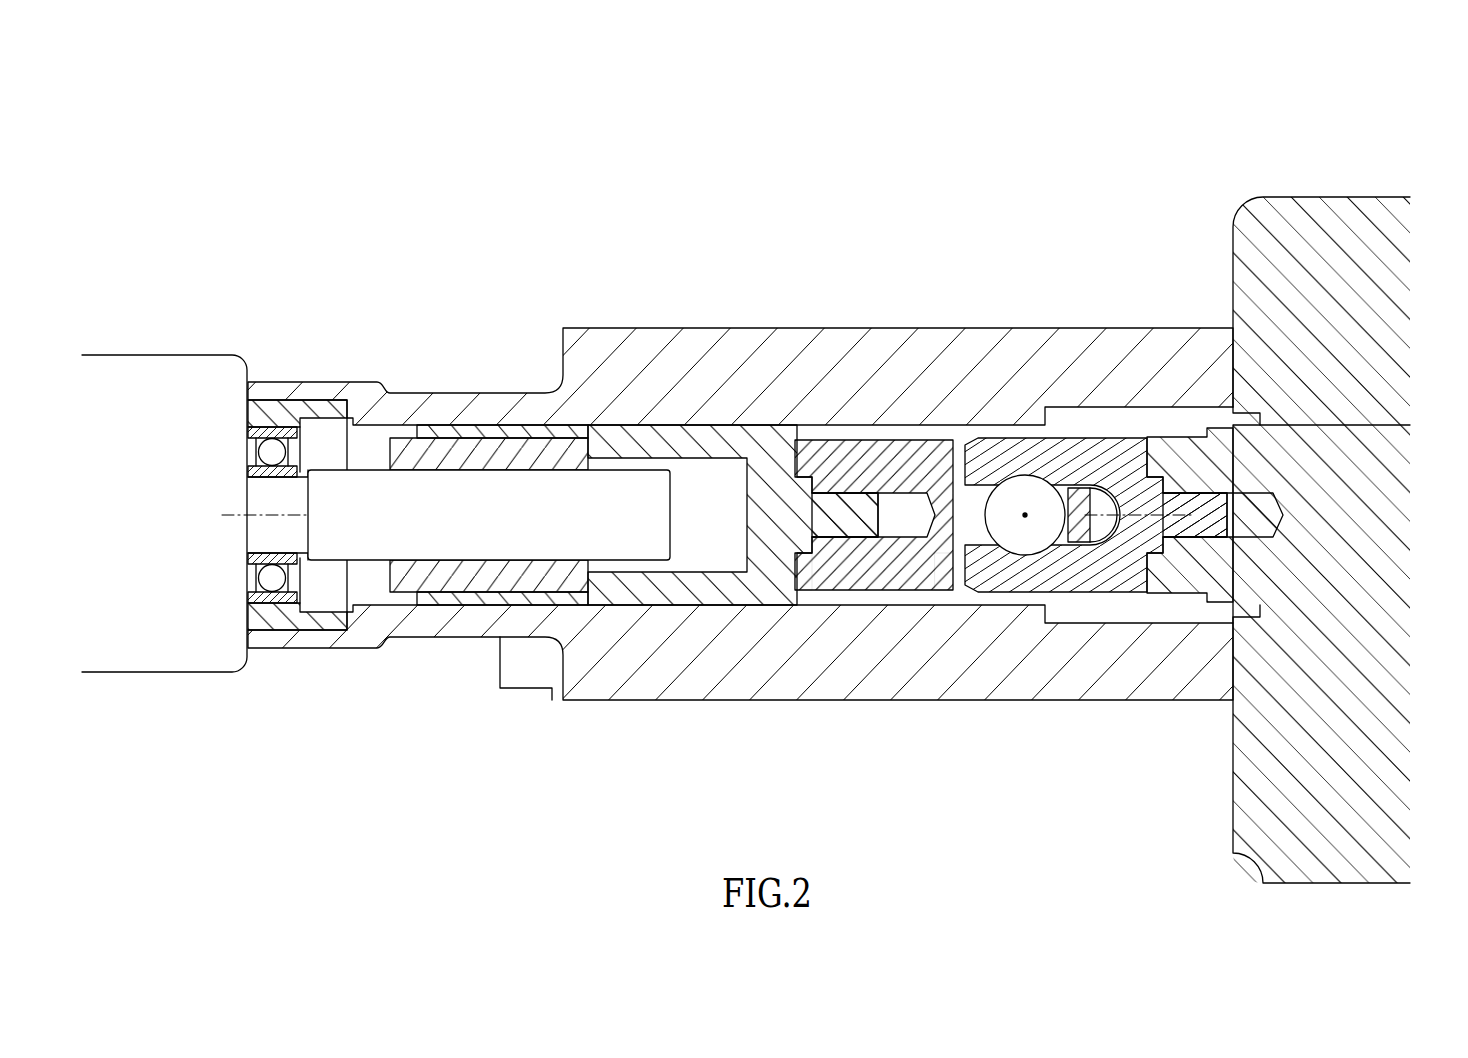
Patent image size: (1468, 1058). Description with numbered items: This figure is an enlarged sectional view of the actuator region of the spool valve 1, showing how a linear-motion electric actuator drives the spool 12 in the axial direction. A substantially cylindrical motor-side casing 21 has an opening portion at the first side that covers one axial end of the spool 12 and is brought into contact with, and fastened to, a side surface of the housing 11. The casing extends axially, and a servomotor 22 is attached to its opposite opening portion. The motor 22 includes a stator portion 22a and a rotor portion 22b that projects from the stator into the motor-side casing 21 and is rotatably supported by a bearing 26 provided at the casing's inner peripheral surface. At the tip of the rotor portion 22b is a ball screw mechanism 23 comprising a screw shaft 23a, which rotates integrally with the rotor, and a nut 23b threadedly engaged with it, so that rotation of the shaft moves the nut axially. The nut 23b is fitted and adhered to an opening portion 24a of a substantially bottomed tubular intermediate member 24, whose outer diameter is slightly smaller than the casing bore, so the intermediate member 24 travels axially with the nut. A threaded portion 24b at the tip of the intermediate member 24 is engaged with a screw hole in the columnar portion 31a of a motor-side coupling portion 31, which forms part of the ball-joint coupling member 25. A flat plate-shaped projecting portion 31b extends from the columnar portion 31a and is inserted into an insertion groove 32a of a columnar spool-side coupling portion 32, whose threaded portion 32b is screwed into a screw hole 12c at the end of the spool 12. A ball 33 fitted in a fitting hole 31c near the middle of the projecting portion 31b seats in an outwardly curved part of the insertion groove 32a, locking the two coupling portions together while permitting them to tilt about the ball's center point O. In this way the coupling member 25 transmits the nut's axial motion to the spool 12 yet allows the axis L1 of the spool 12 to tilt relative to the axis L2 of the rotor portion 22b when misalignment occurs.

The spool valve 1 is at (1312, 128).
The housing 11 is at (1350, 217).
The spool 12 is at (1303, 560).
The screw hole 12c is at (1250, 490).
The motor-side casing 21 is at (765, 328).
The motor 22 is at (138, 712).
The stator portion 22a is at (179, 662).
The rotor portion 22b is at (262, 491).
The ball screw mechanism 23 is at (489, 630).
The screw shaft 23a is at (373, 550).
The nut 23b is at (455, 590).
The intermediate member 24 is at (647, 531).
The opening portion 24a is at (474, 433).
The threaded portion 24b is at (845, 522).
The coupling member 25 is at (1060, 237).
The bearing 26 is at (283, 428).
The motor-side coupling portion 31 is at (942, 508).
The columnar portion 31a is at (893, 592).
The projecting portion 31b is at (1067, 437).
The fitting hole 31c is at (985, 590).
The spool-side coupling portion 32 is at (1096, 508).
The insertion groove 32a is at (1080, 545).
The threaded portion 32b is at (1195, 545).
The ball 33 is at (1020, 492).
The center point O is at (1025, 522).
The axis L1 is at (1190, 500).
The axis L2 is at (233, 520).